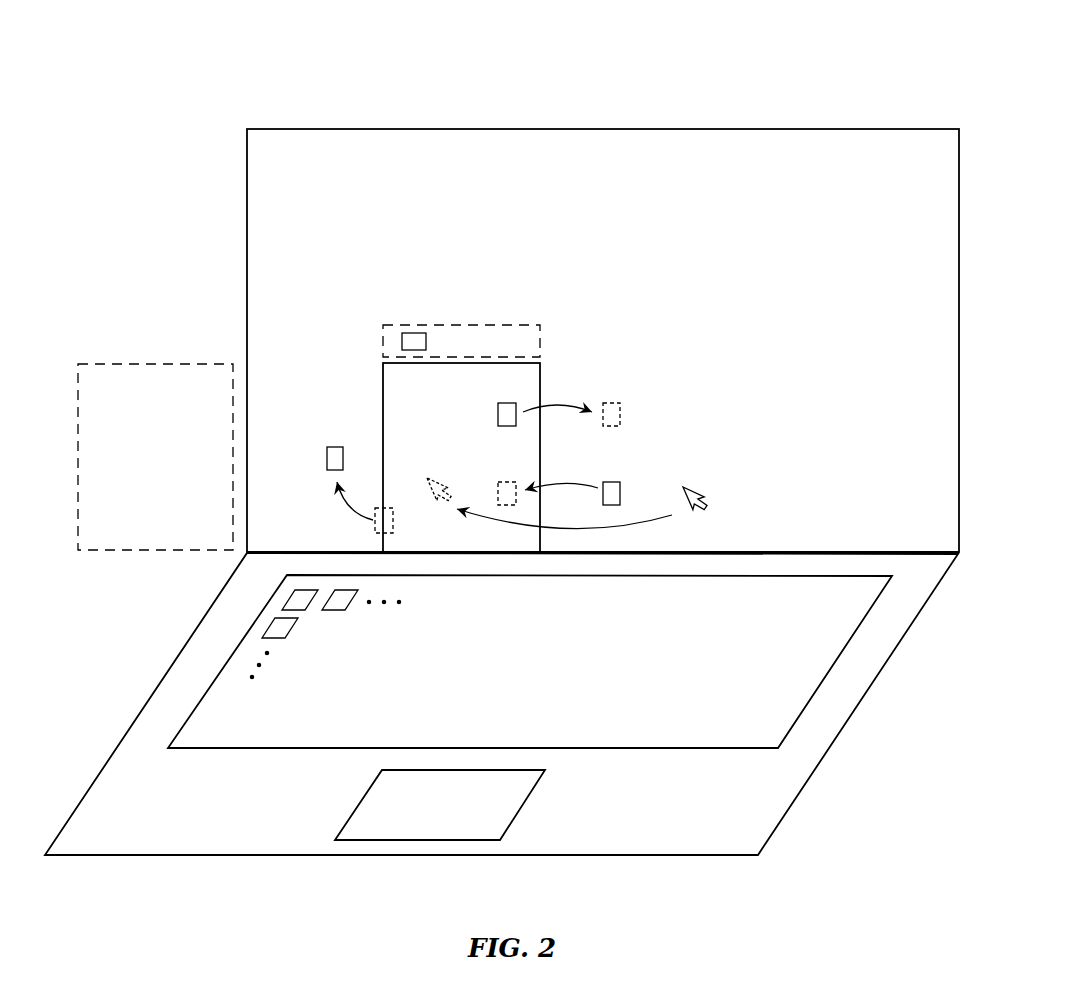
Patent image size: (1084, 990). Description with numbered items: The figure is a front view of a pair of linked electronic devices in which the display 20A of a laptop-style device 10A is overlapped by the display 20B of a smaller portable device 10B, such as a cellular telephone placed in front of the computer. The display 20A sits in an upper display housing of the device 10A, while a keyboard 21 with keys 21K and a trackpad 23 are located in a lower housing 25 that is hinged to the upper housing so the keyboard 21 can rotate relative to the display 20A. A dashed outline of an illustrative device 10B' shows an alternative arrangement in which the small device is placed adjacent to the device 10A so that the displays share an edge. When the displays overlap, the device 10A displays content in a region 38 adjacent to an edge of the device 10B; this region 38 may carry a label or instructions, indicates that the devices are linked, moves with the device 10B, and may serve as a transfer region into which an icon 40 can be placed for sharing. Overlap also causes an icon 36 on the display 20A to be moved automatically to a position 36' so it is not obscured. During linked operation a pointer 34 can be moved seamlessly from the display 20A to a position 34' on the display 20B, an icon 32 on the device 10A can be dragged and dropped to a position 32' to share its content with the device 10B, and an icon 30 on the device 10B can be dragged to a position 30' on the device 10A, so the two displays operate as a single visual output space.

The device 10A is at (736, 108).
The device 10B is at (493, 440).
The illustrative device 10B' is at (155, 492).
The display 20A is at (803, 542).
The display 20B is at (458, 535).
The keyboard 21 is at (832, 673).
The keys 21K is at (332, 610).
The trackpad 23 is at (525, 803).
The lower housing 25 is at (785, 813).
The icon 30 is at (541, 439).
The position 30' is at (640, 412).
The icon 32 is at (598, 489).
The position 32' is at (483, 483).
The pointer 34 is at (609, 504).
The position 34' is at (438, 467).
The icon 36 is at (351, 516).
The position 36' is at (308, 459).
The region 38 is at (472, 323).
The icon 40 is at (415, 332).